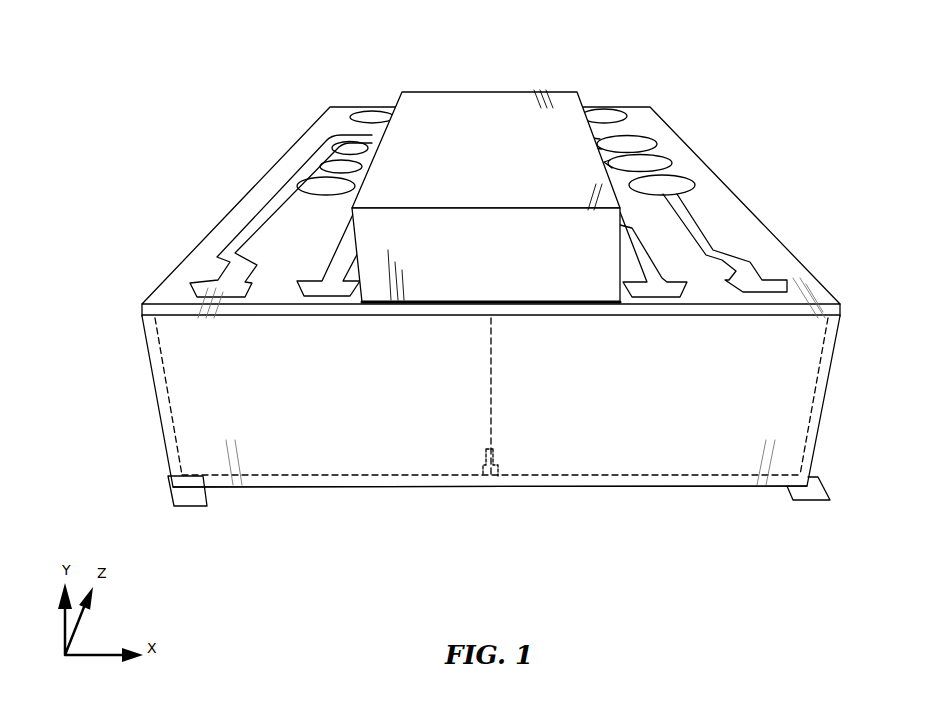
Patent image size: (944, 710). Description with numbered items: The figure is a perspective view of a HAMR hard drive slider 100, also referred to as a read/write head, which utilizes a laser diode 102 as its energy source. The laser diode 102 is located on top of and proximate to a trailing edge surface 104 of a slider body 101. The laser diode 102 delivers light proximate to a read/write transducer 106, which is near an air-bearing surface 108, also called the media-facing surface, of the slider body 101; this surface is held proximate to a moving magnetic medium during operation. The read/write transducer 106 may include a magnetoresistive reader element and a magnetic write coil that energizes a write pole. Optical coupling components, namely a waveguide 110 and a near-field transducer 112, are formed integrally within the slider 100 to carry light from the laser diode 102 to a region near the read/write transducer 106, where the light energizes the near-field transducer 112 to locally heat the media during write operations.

The HAMR hard drive slider 100 is at (477, 307).
The slider body 101 is at (327, 125).
The laser diode 102 is at (417, 91).
The trailing edge surface 104 is at (192, 507).
The read/write transducer 106 is at (496, 473).
The air-bearing surface 108 is at (820, 500).
The waveguide 110 is at (491, 378).
The near-field transducer 112 is at (483, 487).